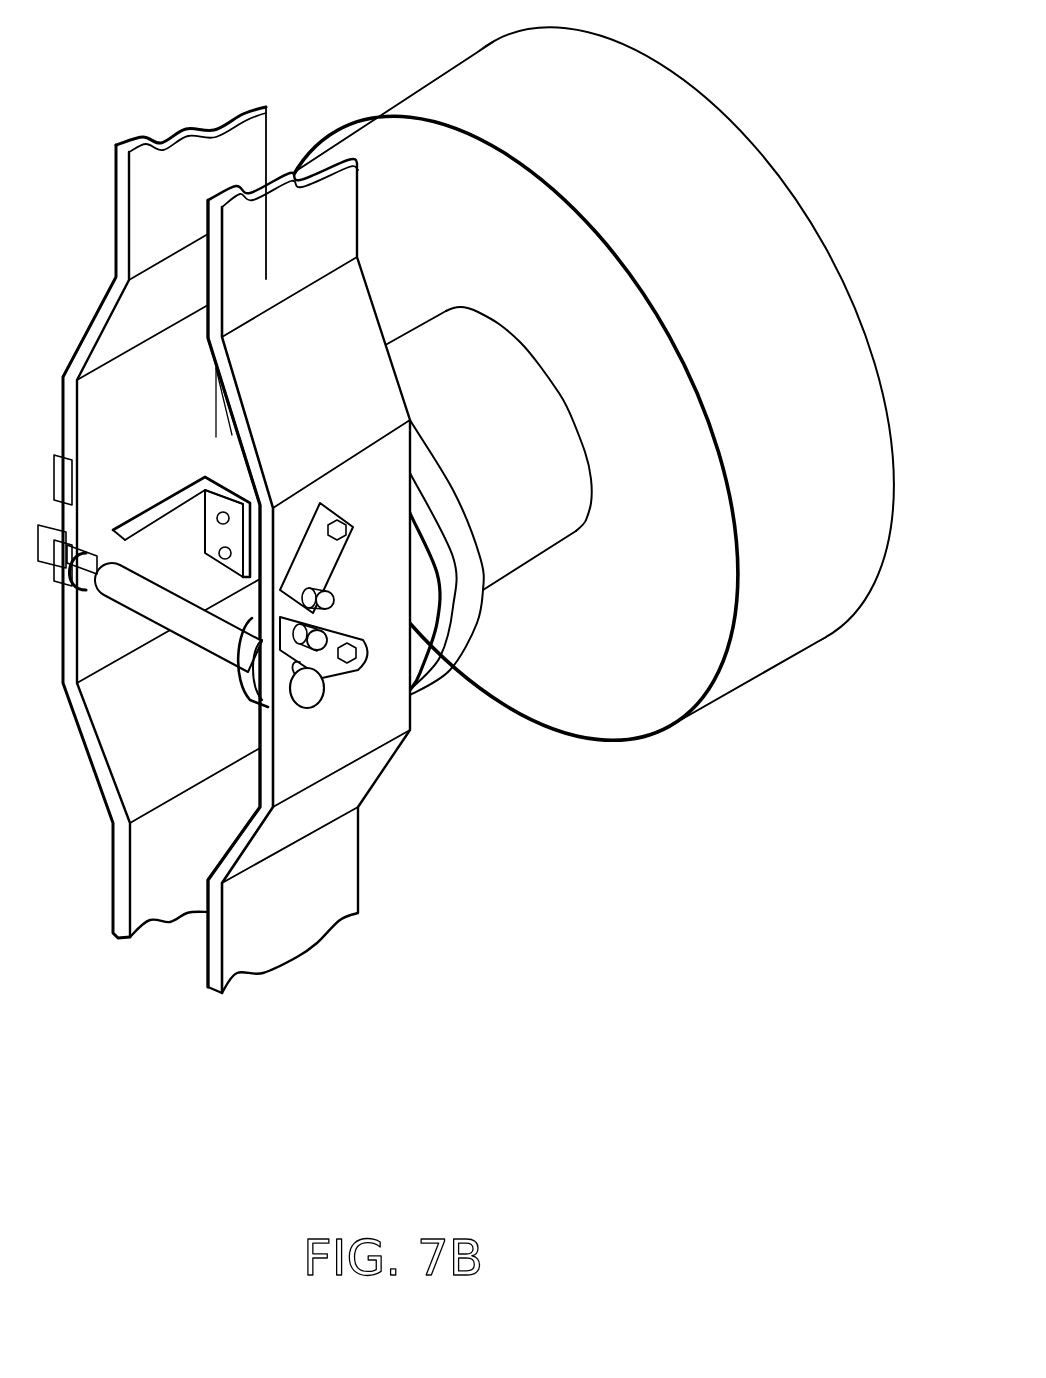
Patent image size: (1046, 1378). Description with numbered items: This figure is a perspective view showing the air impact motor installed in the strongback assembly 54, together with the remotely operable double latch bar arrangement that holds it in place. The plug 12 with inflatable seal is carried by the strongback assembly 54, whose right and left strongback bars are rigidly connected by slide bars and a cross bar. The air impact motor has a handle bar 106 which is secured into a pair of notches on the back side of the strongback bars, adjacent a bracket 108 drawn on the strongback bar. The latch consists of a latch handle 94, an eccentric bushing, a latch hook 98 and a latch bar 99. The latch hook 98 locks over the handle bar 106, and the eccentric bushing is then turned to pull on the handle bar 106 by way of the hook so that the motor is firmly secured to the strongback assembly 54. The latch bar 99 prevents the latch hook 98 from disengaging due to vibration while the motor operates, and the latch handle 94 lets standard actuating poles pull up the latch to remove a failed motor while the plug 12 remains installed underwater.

The plug 12 is at (468, 77).
The strongback assembly 54 is at (145, 139).
The latch handle 94 is at (340, 677).
The latch hook 98 is at (277, 693).
The latch bar 99 is at (325, 555).
The handle bar 106 is at (200, 633).
The bracket 108 is at (222, 462).